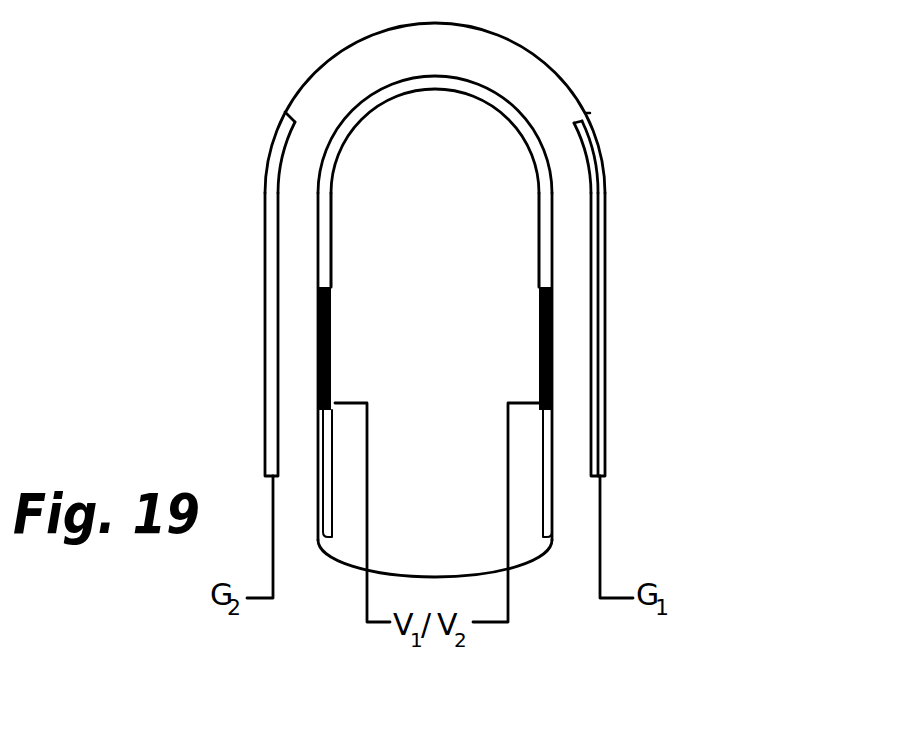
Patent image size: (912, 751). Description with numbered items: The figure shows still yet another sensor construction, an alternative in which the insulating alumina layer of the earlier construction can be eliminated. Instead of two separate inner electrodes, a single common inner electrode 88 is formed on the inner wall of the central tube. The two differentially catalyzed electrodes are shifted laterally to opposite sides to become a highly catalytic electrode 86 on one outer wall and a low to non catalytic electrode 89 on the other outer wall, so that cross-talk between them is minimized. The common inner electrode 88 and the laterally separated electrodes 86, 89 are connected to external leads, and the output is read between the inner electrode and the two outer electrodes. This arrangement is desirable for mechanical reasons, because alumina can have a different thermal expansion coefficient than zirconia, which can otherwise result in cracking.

The highly catalytic electrode 86 is at (265, 247).
The common inner electrode 88 is at (540, 337).
The low to non catalytic electrode 89 is at (603, 213).